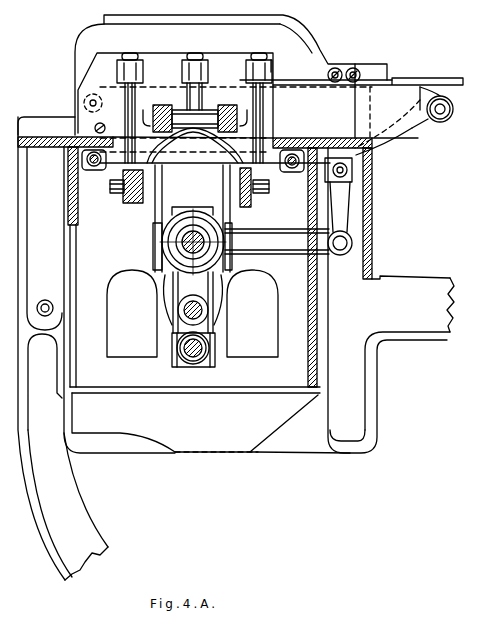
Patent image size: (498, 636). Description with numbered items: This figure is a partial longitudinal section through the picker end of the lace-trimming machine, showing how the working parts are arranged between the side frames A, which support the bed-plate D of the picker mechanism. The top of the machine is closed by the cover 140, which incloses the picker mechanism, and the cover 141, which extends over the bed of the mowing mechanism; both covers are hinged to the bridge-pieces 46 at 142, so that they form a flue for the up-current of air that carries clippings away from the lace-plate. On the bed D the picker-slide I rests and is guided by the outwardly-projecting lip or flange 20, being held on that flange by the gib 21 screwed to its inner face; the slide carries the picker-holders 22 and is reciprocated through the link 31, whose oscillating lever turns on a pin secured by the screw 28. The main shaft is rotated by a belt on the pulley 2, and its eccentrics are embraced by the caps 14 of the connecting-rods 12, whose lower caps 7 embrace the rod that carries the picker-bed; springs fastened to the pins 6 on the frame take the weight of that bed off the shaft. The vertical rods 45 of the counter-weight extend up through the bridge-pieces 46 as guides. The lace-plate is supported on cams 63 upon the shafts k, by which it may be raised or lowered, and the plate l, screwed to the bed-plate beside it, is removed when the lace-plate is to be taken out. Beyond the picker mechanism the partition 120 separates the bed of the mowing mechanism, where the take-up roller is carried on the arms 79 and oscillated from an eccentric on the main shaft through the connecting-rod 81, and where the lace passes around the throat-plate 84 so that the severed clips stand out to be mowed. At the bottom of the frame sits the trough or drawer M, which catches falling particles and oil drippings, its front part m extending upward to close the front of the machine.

The cover 140 is at (233, 83).
The picker-holder 22 is at (272, 63).
The hinge 142 is at (352, 67).
The cover 141 is at (428, 78).
The bridge-piece 46 is at (371, 101).
The pulley 2 is at (452, 109).
The arm 79 is at (398, 142).
The screw 28 is at (352, 170).
The throat-plate 84 is at (338, 212).
The partition 120 is at (368, 236).
The connecting-rod 81 is at (272, 252).
The cam 63 is at (295, 186).
The link 31 is at (226, 108).
The lip or flange 20 is at (263, 168).
The gib 21 is at (126, 196).
The vertical rod 45 is at (163, 178).
The cap 14 is at (160, 233).
The connecting-rod 12 is at (175, 298).
The cap 7 is at (178, 355).
The pin 6 is at (192, 313).
The trough or drawer M is at (207, 300).
The side frame A is at (63, 348).
The bed-plate D is at (106, 242).
The front part of drawer m is at (70, 255).
The plate l is at (46, 118).
The shaft k is at (90, 182).
The picker-slide I is at (215, 141).